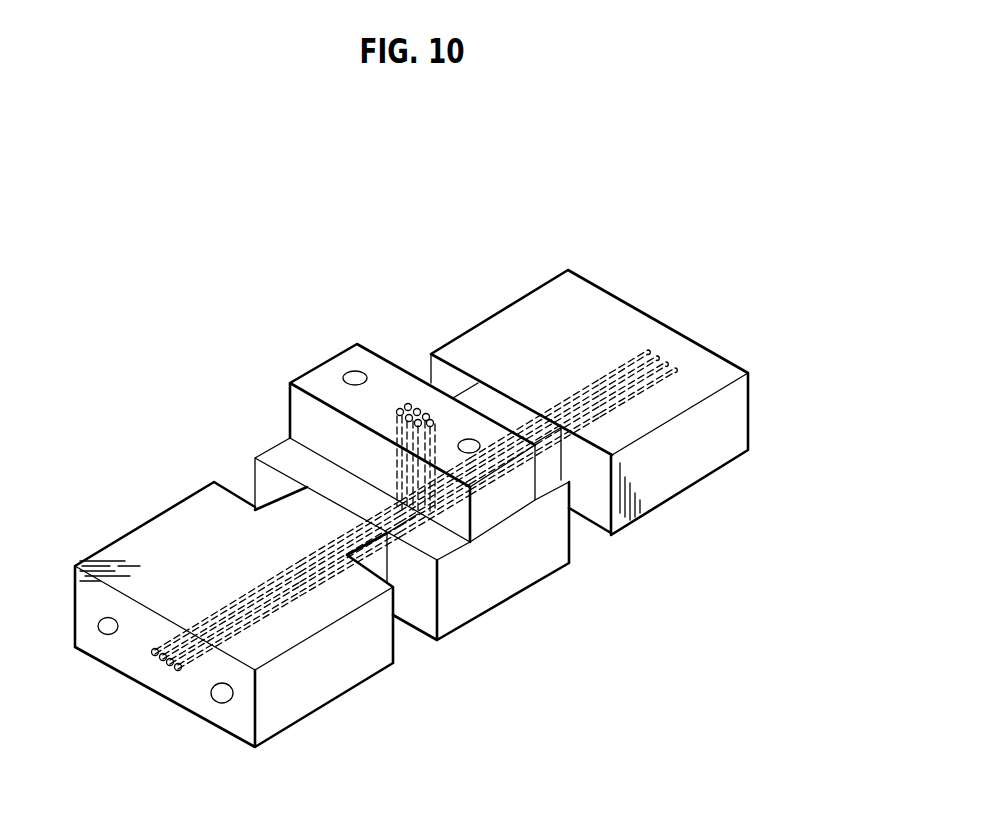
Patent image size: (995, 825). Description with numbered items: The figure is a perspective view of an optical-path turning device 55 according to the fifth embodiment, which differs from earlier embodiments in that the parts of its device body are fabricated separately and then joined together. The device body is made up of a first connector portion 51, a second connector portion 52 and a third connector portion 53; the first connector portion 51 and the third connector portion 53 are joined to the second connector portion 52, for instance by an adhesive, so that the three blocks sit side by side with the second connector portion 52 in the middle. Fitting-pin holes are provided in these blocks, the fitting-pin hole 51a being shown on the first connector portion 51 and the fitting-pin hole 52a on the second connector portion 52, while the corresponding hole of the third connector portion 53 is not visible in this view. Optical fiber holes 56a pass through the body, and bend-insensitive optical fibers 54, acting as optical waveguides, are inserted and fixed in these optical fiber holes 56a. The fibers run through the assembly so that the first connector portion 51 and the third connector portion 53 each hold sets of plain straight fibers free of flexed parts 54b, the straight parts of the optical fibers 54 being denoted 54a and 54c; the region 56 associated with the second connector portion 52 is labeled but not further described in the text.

The optical-path turning device 55 is at (411, 246).
The first connector portion 51 is at (148, 545).
The fitting-pin hole 51a is at (105, 634).
The second connector portion 52 is at (326, 370).
The fitting-pin hole 52a is at (356, 371).
The third connector portion 53 is at (517, 317).
The bend-insensitive optical fiber 54 is at (320, 583).
The straight part 54a is at (258, 620).
The flexed part 54b is at (432, 507).
The straight part 54c is at (400, 411).
The fiber holding portion 56 is at (308, 387).
The optical fiber hole 56a is at (508, 467).